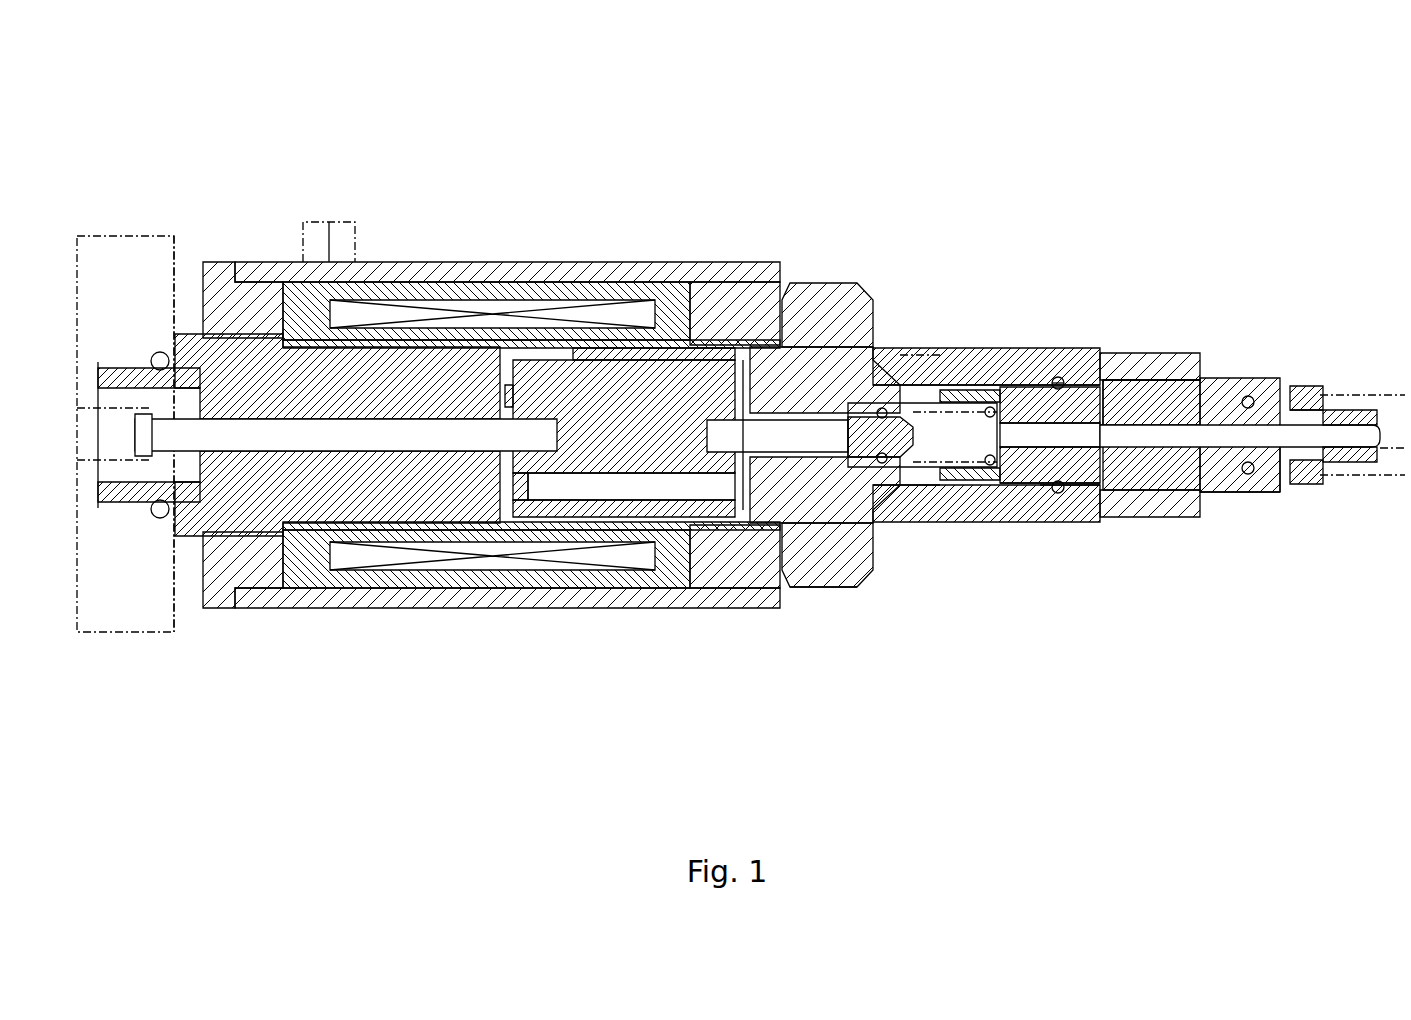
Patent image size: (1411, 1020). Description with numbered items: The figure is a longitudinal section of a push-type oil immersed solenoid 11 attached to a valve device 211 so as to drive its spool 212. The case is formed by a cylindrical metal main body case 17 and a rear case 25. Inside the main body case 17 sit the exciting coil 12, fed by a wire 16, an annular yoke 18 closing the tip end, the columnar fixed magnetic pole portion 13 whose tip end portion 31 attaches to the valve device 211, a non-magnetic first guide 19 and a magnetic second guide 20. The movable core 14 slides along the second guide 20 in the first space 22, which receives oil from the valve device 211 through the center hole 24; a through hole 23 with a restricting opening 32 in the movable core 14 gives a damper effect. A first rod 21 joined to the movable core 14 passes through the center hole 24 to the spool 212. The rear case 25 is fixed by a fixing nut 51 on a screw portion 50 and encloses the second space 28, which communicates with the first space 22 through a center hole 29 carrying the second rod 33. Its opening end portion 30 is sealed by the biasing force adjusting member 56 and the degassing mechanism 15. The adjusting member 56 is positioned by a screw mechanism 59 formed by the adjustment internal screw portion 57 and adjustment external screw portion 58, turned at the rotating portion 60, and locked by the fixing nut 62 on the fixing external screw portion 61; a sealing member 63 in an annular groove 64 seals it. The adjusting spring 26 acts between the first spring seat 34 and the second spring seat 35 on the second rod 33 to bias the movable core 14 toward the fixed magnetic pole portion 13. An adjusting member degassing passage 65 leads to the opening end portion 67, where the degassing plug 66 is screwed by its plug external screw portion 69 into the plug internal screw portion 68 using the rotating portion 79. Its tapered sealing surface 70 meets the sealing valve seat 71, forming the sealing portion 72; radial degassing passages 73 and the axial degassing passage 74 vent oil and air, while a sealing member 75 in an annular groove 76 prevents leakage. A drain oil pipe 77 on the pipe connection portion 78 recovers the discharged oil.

The oil immersed solenoid 11 is at (695, 125).
The exciting coil 12 is at (608, 318).
The fixed magnetic pole portion 13 is at (315, 368).
The movable core 14 is at (757, 396).
The degassing mechanism 15 is at (1115, 415).
The wire 16 is at (329, 240).
The main body case 17 is at (525, 264).
The yoke 18 is at (227, 293).
The first guide 19 is at (430, 340).
The second guide 20 is at (742, 345).
The first rod 21 is at (258, 447).
The first space 22 is at (520, 505).
The through hole 23 is at (668, 492).
The center hole 24 is at (220, 419).
The rear case 25 is at (898, 353).
The adjusting spring 26 is at (907, 360).
The second space 28 is at (920, 470).
The center hole 29 is at (770, 522).
The opening end portion 30 is at (1090, 448).
The tip end portion 31 is at (123, 493).
The restricting opening 32 is at (568, 500).
The second rod 33 is at (748, 440).
The first spring seat 34 is at (935, 478).
The second spring seat 35 is at (903, 445).
The screw portion 50 is at (848, 535).
The fixing nut 51 is at (838, 580).
The biasing force adjusting member 56 is at (1255, 380).
The adjustment internal screw portion 57 is at (987, 388).
The adjustment external screw portion 58 is at (1020, 390).
The screw mechanism 59 is at (1030, 122).
The rotating portion 60 is at (1265, 385).
The fixing external screw portion 61 is at (1185, 380).
The fixing nut 62 is at (1165, 355).
The sealing member 63 is at (1048, 505).
The annular groove 64 is at (1065, 492).
The adjusting member degassing passage 65 is at (1120, 460).
The degassing plug 66 is at (1322, 405).
The opening end portion 67 is at (1262, 470).
The plug internal screw portion 68 is at (1200, 478).
The plug external screw portion 69 is at (1215, 450).
The sealing surface 70 is at (1062, 384).
The sealing valve seat 71 is at (1095, 398).
The sealing portion 72 is at (1100, 217).
The radial degassing passages 73 is at (1160, 442).
The axial degassing passage 74 is at (1350, 437).
The sealing member 75 is at (1240, 478).
The annular groove 76 is at (1285, 480).
The drain oil pipe 77 is at (1393, 480).
The pipe connection portion 78 is at (1357, 462).
The rotating portion 79 is at (1309, 405).
The valve device 211 is at (120, 236).
The spool 212 is at (87, 407).